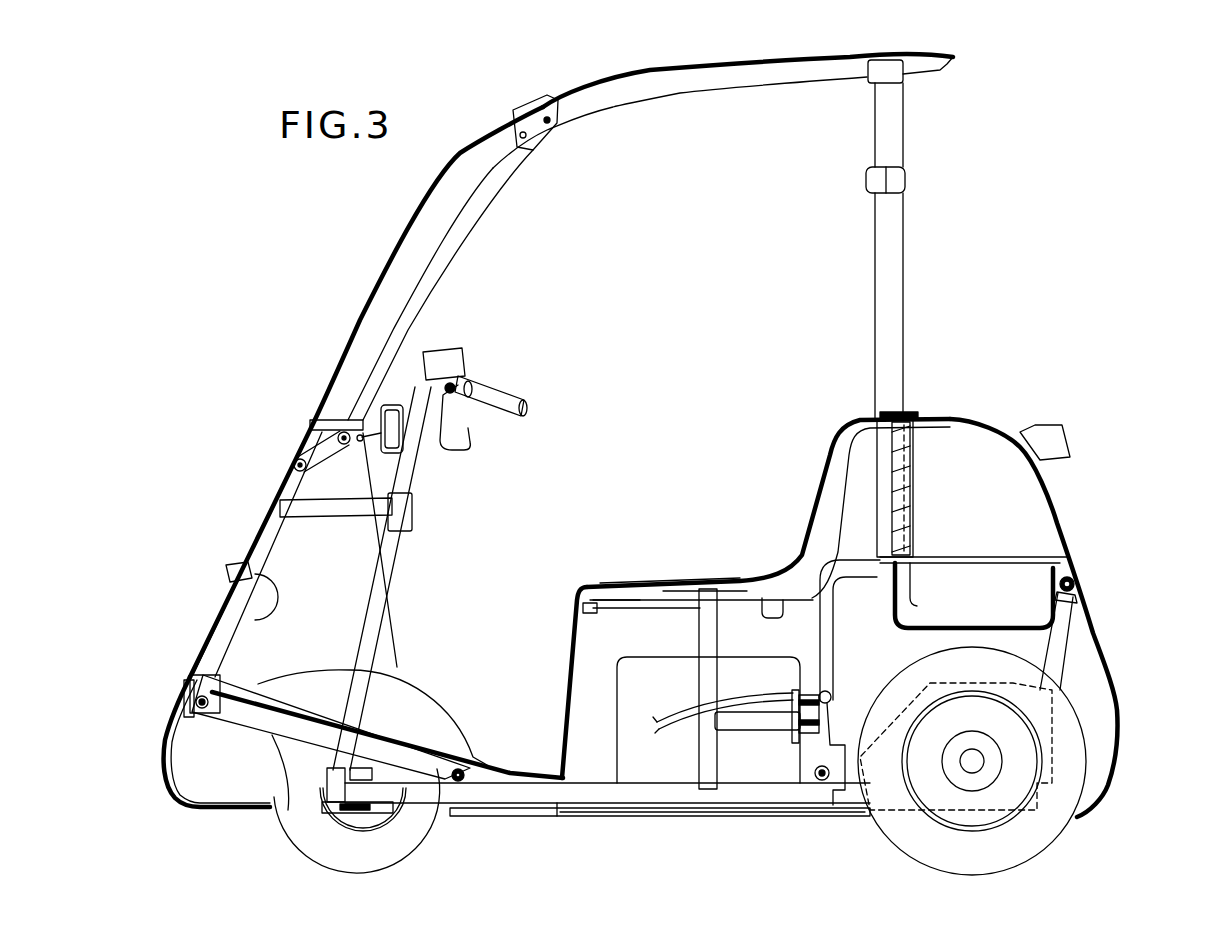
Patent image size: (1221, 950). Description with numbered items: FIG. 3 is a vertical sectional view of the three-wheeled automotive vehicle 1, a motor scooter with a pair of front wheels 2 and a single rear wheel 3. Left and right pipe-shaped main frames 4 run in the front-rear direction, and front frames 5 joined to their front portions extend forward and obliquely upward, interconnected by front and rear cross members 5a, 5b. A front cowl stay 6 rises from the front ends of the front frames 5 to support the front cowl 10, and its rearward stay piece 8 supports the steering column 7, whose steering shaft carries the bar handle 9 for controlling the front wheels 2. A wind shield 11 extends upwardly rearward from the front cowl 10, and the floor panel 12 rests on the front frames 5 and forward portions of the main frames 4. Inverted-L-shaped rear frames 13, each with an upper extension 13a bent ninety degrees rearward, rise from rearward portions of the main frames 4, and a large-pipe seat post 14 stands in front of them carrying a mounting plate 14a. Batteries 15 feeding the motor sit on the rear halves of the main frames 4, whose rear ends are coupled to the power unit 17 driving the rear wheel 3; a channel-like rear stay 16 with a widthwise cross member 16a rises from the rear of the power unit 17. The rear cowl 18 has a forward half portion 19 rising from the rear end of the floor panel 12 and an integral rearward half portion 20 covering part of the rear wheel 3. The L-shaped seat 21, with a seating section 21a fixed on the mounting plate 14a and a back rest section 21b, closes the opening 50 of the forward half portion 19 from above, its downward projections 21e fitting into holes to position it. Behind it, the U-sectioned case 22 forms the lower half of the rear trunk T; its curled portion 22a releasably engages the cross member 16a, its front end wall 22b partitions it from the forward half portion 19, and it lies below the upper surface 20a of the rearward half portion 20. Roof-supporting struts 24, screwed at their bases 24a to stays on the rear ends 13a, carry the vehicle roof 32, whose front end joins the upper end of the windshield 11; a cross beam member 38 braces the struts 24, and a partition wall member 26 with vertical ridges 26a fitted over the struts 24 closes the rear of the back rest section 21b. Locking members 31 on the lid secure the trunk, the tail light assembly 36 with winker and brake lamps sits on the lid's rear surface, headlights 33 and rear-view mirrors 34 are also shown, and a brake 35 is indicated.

The three-wheeled automotive vehicle 1 is at (1018, 218).
The front wheels 2 is at (310, 830).
The rear wheel 3 is at (1040, 835).
The main frames 4 is at (578, 795).
The front frames 5 is at (255, 720).
The cross member 5a is at (175, 724).
The cross member 5b is at (470, 763).
The front cowl stay 6 is at (270, 558).
The steering column 7 is at (390, 578).
The stay piece 8 is at (355, 520).
The bar handle 9 is at (497, 390).
The front cowl 10 is at (215, 635).
The wind shield 11 is at (393, 247).
The floor panel 12 is at (410, 740).
The rear frames 13 is at (840, 668).
The upper extension 13a is at (870, 590).
The seat post 14 is at (703, 682).
The mounting plate 14a is at (642, 618).
The batteries 15 is at (677, 790).
The rear stay 16 is at (1100, 660).
The cross member 16a is at (1085, 605).
The power unit 17 is at (950, 810).
The rear cowl 18 is at (575, 630).
The forward half portion 19 is at (520, 800).
The rearward half portion 20 is at (1115, 715).
The upper surface 20a is at (1030, 560).
The seat 21 is at (612, 577).
The seating section 21a is at (705, 575).
The back rest section 21b is at (840, 425).
The downward projections 21e is at (762, 585).
The case 22 is at (935, 612).
The curled portion 22a is at (1075, 580).
The front end wall 22b is at (905, 600).
The roof-supporting struts 24 is at (893, 292).
The bases 24a is at (875, 460).
The partition wall member 26 is at (910, 463).
The vertical ridges 26a is at (912, 505).
The locking members 31 is at (905, 412).
The vehicle roof 32 is at (655, 68).
The headlights 33 is at (226, 572).
The rear-view mirrors 34 is at (380, 418).
The brake 35 is at (848, 820).
The tail light assembly 36 is at (1048, 428).
The cross beam member 38 is at (905, 178).
The opening 50 is at (615, 578).
The rear trunk T is at (1020, 525).